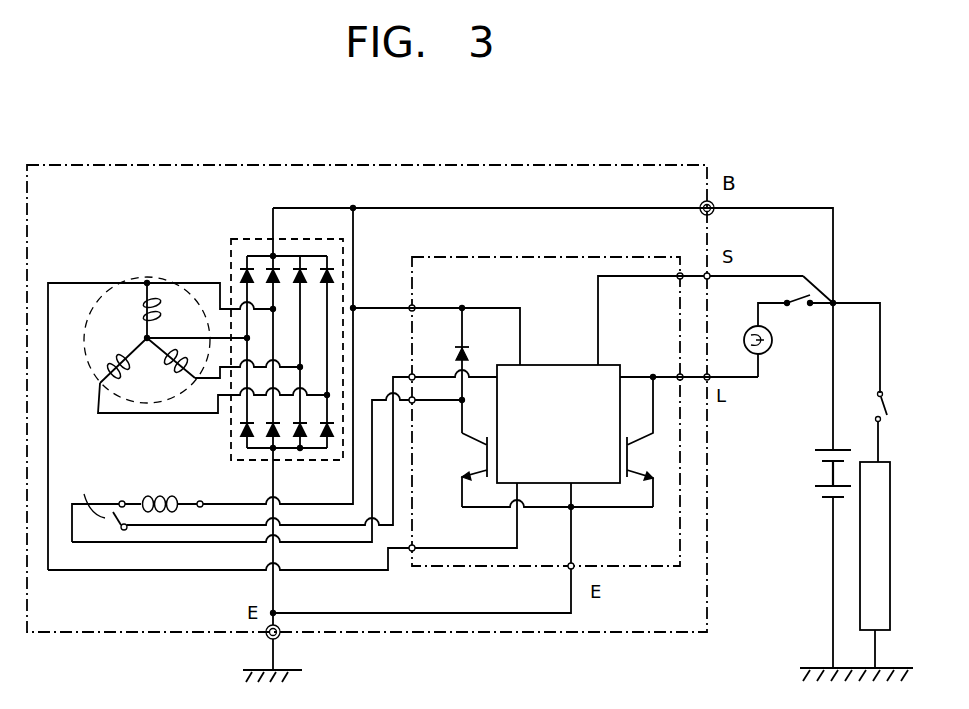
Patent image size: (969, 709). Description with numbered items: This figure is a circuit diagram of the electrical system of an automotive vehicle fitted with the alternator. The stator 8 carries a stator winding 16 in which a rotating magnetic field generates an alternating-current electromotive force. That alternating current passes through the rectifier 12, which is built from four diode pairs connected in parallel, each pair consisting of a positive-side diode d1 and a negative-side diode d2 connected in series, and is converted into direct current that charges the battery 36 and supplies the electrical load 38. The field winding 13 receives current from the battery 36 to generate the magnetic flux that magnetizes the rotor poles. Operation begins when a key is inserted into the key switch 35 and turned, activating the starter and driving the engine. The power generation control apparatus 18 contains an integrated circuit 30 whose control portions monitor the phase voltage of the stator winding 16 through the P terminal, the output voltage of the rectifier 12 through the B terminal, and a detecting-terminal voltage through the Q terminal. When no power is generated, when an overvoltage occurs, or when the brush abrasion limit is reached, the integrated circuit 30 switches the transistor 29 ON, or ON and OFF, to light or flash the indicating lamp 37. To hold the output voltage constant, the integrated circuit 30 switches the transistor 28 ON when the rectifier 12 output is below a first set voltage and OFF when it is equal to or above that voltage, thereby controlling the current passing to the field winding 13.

The stator 8 is at (162, 280).
The stator winding 16 is at (140, 318).
The rectifier 12 is at (245, 240).
The positive-side diode d1 is at (237, 272).
The negative-side diode d2 is at (233, 424).
The field winding 13 is at (157, 517).
The power generation control apparatus 18 is at (578, 396).
The transistor 28 is at (472, 460).
The transistor 29 is at (658, 432).
The integrated circuit 30 is at (593, 508).
The key switch 35 is at (835, 290).
The battery 36 is at (815, 468).
The indicating lamp 37 is at (776, 347).
The electrical load 38 is at (864, 457).